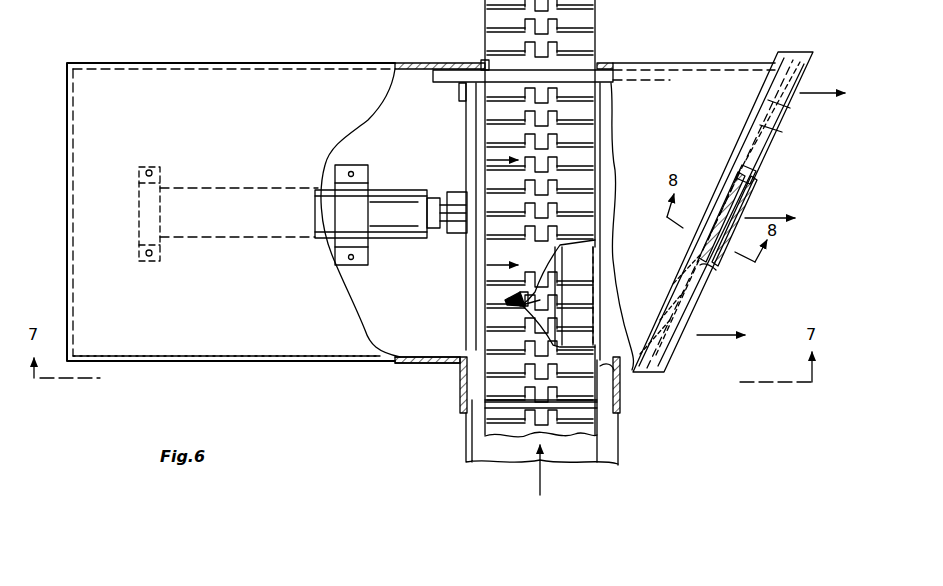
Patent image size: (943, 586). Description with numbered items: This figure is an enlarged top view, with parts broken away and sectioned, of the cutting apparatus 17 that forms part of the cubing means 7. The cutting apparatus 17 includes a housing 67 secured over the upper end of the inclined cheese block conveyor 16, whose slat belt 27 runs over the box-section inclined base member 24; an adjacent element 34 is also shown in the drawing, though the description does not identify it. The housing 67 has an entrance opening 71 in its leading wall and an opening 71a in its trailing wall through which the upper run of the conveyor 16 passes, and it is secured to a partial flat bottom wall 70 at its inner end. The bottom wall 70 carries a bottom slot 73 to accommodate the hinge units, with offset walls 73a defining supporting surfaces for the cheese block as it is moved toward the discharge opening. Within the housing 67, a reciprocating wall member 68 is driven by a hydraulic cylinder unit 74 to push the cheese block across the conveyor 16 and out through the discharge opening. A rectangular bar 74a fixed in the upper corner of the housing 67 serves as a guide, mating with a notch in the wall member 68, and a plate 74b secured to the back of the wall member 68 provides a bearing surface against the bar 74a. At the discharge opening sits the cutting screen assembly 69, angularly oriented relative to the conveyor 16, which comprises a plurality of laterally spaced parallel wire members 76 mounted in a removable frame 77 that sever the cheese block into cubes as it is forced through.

The cutting apparatus 17 is at (168, 378).
The housing 67 is at (302, 360).
The hydraulic cylinder unit 74 is at (404, 190).
The rectangular bar 74a is at (455, 56).
The plate 74b is at (458, 96).
The opening 71a is at (487, 62).
The reciprocating wall member 68 is at (466, 140).
The conveyor chain 34 is at (572, 66).
The inclined base member 24 is at (551, 292).
The bottom slot 73 is at (505, 298).
The offset walls 73a is at (520, 306).
The partial flat bottom wall 70 is at (442, 346).
The entrance opening 71 is at (612, 372).
The slat belt 27 is at (590, 410).
The inclined cheese block conveyor 16 is at (490, 415).
The cubing means 7 is at (762, 181).
The cutting screen assembly 69 is at (717, 194).
The removable frame 77 is at (746, 178).
The wire members 76 is at (770, 138).